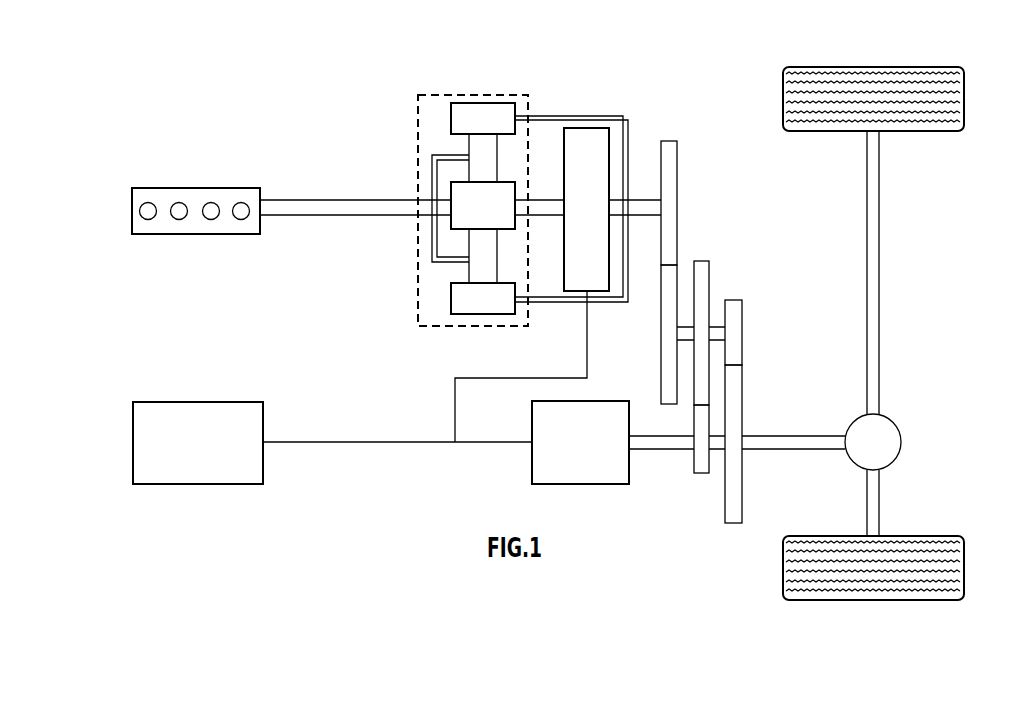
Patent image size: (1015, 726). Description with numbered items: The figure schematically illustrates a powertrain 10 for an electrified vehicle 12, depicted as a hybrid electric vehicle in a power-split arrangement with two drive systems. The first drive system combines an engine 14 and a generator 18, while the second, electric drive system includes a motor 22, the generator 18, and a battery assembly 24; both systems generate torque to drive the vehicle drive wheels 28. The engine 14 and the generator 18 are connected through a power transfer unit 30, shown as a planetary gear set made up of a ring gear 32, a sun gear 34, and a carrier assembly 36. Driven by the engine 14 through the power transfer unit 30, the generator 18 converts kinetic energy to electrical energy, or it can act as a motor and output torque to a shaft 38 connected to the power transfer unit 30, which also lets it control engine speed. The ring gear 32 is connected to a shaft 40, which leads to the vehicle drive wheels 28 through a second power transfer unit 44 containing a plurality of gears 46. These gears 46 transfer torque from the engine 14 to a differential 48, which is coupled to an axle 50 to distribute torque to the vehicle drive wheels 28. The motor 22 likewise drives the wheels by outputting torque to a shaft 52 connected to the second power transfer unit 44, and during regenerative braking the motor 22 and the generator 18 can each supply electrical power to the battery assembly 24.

The powertrain 10 is at (303, 114).
The electrified vehicle 12 is at (605, 66).
The engine 14 is at (143, 188).
The generator 18 is at (570, 128).
The motor 22 is at (630, 472).
The battery assembly 24 is at (147, 402).
The vehicle drive wheels 28 is at (861, 67).
The power transfer unit 30 is at (418, 295).
The ring gear 32 is at (451, 117).
The sun gear 34 is at (451, 190).
The carrier assembly 36 is at (433, 257).
The shaft 38 is at (537, 200).
The shaft 40 is at (647, 199).
The second power transfer unit 44 is at (731, 232).
The gears 46 is at (742, 332).
The differential 48 is at (897, 458).
The axle 50 is at (880, 255).
The shaft 52 is at (670, 450).